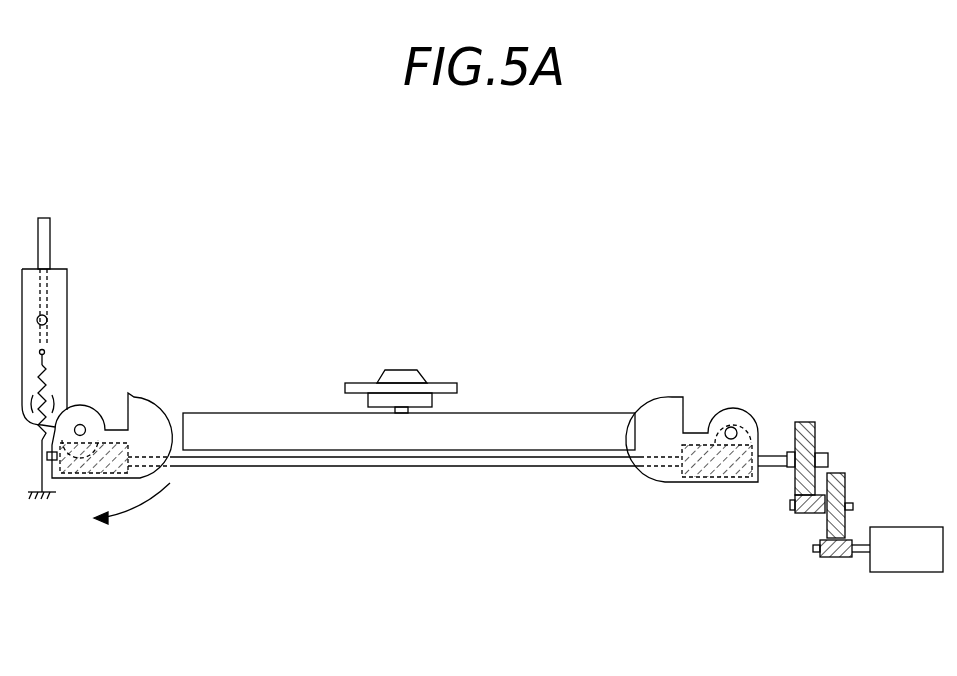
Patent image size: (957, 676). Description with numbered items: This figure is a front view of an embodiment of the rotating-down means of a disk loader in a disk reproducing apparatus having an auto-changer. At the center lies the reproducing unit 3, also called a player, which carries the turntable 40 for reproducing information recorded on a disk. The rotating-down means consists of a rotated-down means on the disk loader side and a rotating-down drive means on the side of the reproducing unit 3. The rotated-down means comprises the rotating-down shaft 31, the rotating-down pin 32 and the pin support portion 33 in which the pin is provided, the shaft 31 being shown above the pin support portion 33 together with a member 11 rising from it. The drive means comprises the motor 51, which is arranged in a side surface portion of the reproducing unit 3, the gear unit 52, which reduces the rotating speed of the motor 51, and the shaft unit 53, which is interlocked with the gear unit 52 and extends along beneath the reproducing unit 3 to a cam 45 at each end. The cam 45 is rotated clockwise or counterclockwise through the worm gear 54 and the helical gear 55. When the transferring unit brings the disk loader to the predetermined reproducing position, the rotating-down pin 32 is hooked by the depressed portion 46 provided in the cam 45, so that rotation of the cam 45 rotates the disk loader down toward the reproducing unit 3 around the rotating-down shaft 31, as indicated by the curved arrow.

The reproducing unit 3 is at (500, 423).
The lock rod 11 is at (50, 236).
The rotating-down shaft 31 is at (47, 318).
The rotating-down pin 32 is at (63, 393).
The pin support portion 33 is at (67, 283).
The turntable 40 is at (422, 344).
The cam 45 is at (160, 405).
The depressed portion 46 is at (113, 430).
The motor 51 is at (868, 570).
The gear unit 52 is at (840, 480).
The shaft unit 53 is at (455, 468).
The worm gear 54 is at (82, 474).
The helical gear 55 is at (97, 418).